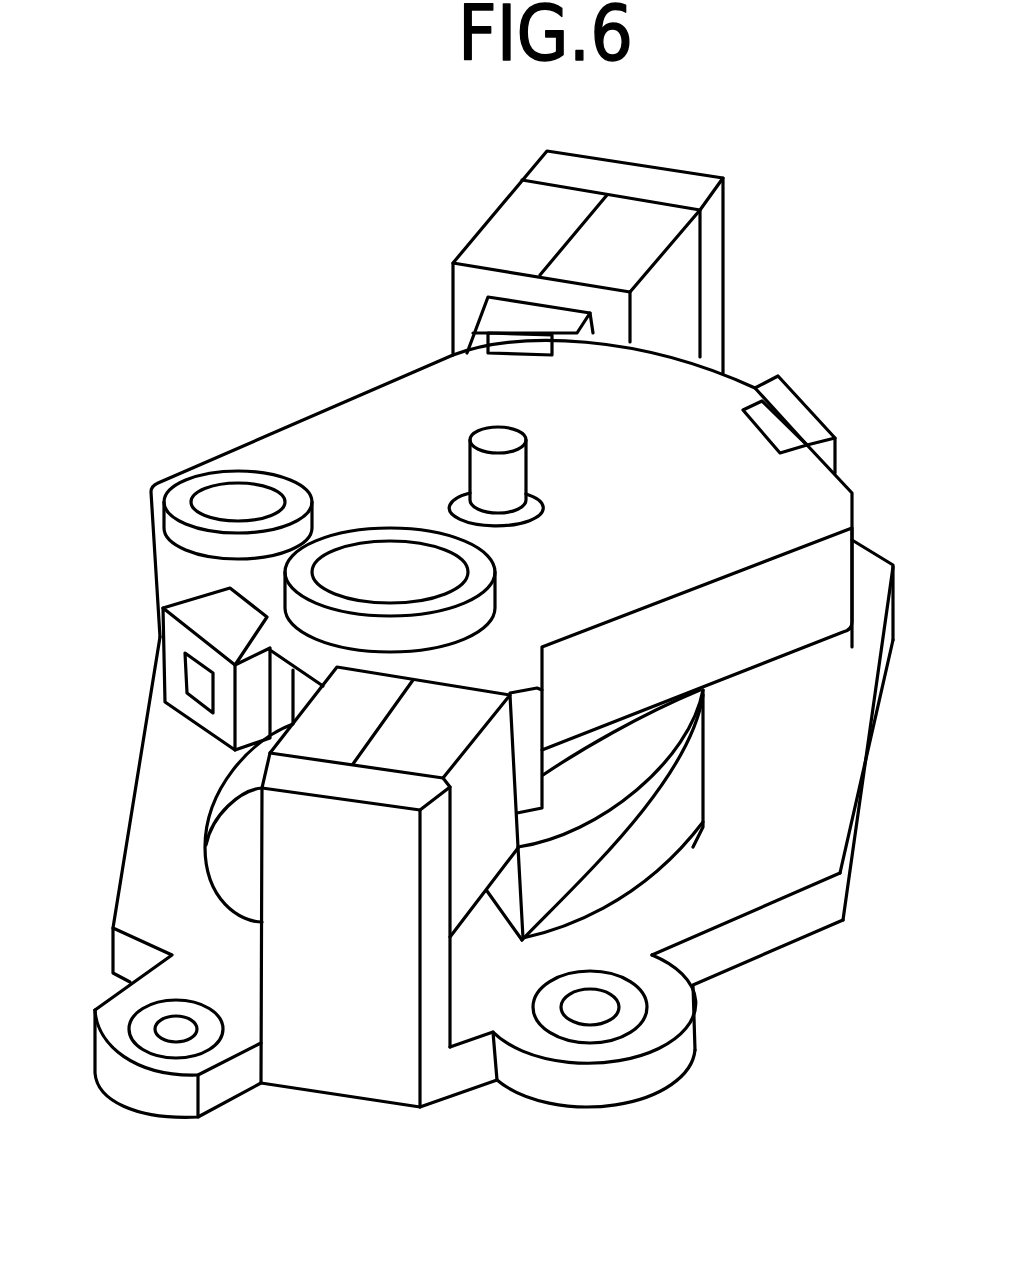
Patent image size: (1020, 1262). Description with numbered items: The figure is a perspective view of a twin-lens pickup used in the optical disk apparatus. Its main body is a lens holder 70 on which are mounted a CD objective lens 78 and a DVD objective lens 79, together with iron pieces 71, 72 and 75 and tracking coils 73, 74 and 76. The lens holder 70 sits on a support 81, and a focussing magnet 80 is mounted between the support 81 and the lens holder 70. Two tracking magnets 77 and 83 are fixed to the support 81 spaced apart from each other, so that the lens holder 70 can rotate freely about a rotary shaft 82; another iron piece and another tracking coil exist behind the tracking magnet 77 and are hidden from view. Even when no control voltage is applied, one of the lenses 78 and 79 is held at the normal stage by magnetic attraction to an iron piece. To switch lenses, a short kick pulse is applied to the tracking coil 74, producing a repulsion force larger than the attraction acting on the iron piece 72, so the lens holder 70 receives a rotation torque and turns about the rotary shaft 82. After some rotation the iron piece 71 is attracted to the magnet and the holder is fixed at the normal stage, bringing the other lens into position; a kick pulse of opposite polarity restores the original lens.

The lens holder 70 is at (817, 620).
The iron piece 71 is at (752, 423).
The iron piece 72 is at (513, 357).
The tracking coil 73 is at (498, 320).
The tracking coil 74 is at (792, 388).
The iron piece 75 is at (232, 600).
The tracking coil 76 is at (182, 633).
The tracking magnet 77 is at (465, 852).
The CD objective lens 78 is at (227, 507).
The DVD objective lens 79 is at (378, 560).
The focussing magnet 80 is at (673, 843).
The support 81 is at (637, 1077).
The rotary shaft 82 is at (528, 465).
The tracking magnet 83 is at (682, 272).